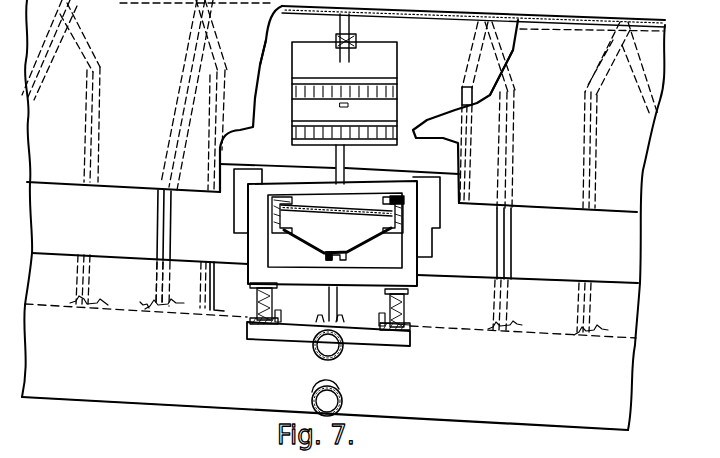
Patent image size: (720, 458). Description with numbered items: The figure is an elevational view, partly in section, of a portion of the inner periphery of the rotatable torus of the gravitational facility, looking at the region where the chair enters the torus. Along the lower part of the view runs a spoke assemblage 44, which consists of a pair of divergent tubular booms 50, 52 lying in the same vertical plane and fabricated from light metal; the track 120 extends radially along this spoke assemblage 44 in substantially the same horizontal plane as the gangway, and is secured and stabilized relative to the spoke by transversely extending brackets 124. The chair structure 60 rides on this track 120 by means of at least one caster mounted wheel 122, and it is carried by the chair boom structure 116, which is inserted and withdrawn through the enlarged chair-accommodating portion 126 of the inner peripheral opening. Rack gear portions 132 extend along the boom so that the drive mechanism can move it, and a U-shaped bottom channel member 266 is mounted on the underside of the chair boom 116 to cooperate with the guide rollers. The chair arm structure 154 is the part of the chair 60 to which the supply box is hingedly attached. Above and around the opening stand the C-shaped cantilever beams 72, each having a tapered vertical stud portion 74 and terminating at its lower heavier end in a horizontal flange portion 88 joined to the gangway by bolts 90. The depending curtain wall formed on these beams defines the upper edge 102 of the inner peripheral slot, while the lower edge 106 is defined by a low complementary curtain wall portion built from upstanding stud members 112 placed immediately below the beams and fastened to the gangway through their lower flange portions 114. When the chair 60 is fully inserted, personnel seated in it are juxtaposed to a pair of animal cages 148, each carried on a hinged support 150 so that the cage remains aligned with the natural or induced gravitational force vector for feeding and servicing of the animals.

The spoke assemblage 44 is at (298, 378).
The tubular boom 50 is at (342, 390).
The tubular boom 52 is at (343, 351).
The chair structure 60 is at (419, 273).
The cantilever beam 72 is at (262, 42).
The vertical stud portion 74 is at (157, 225).
The horizontal flange portion 88 is at (144, 302).
The bolts 90 is at (177, 304).
The upper edge 102 is at (623, 216).
The lower edge 106 is at (627, 278).
The upstanding stud members 112 is at (215, 284).
The lower flange portions 114 is at (217, 311).
The chair boom structure 116 is at (313, 231).
The track 120 is at (388, 334).
The caster mounted wheel 122 is at (400, 321).
The transversely extending brackets 124 is at (413, 338).
The enlarged chair-accommodating portion 126 is at (243, 128).
The rack gear portions 132 is at (394, 204).
The animal cages 148 is at (400, 70).
The hinged support 150 is at (357, 40).
The chair arm structure 154 is at (440, 219).
The bottom channel member 266 is at (347, 258).